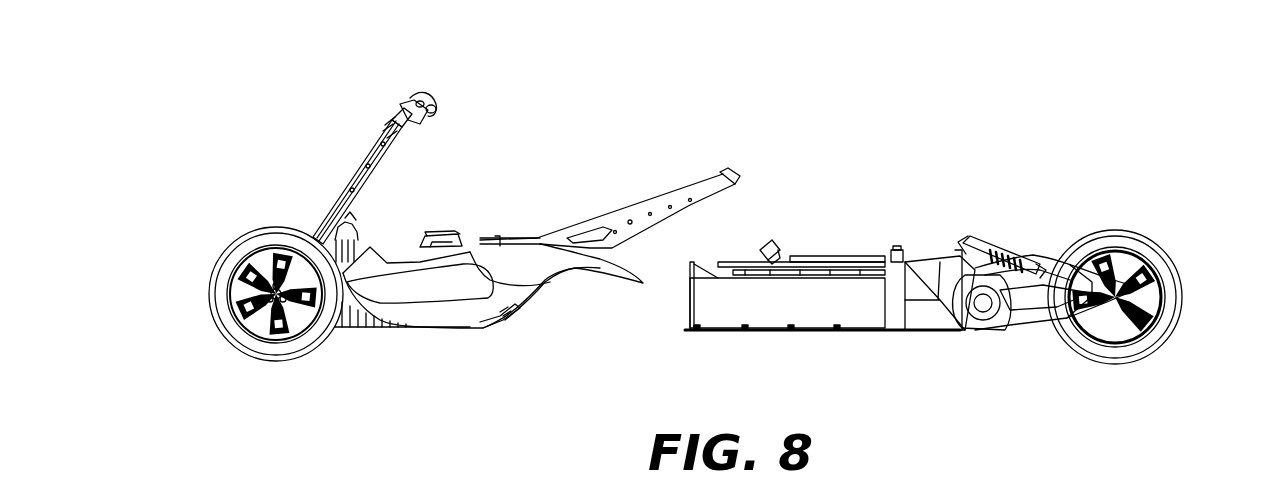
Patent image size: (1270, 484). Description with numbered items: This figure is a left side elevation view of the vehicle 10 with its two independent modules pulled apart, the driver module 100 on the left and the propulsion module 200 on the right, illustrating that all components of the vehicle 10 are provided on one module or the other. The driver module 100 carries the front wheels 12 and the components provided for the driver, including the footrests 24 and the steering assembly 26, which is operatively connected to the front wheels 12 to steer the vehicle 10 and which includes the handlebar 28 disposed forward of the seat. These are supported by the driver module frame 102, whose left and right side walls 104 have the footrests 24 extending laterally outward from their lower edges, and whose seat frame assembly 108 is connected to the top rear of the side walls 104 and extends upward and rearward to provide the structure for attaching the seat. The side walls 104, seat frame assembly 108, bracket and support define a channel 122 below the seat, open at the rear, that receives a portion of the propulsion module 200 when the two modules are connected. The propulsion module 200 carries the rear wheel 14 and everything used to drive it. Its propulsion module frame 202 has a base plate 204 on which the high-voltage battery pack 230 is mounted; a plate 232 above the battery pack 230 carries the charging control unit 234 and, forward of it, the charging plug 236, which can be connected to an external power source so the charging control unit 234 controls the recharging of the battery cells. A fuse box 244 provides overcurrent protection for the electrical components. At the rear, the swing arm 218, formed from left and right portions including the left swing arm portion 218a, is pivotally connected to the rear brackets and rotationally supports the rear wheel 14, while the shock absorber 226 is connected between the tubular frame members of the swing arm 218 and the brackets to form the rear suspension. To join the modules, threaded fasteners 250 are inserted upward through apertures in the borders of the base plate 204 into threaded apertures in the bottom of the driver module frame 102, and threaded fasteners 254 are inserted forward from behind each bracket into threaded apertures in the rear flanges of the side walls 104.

The vehicle 10 is at (730, 72).
The front wheels 12 is at (234, 348).
The rear wheel 14 is at (1146, 348).
The footrests 24 is at (430, 334).
The steering assembly 26 is at (327, 170).
The handlebar 28 is at (432, 106).
The driver module 100 is at (560, 165).
The driver module frame 102 is at (366, 342).
The side walls 104 is at (476, 262).
The seat frame assembly 108 is at (640, 205).
The channel 122 is at (556, 300).
The propulsion module 200 is at (956, 216).
The propulsion module frame 202 is at (826, 345).
The base plate 204 is at (755, 332).
The swing arm 218 is at (1020, 322).
The left swing arm portion 218a is at (1076, 272).
The shock absorber 226 is at (1002, 280).
The battery pack 230 is at (811, 309).
The plate 232 is at (725, 261).
The charging control unit 234 is at (832, 255).
The charging plug 236 is at (772, 240).
The fuse box 244 is at (898, 249).
The threaded fasteners 250 is at (690, 332).
The threaded fasteners 254 is at (962, 310).